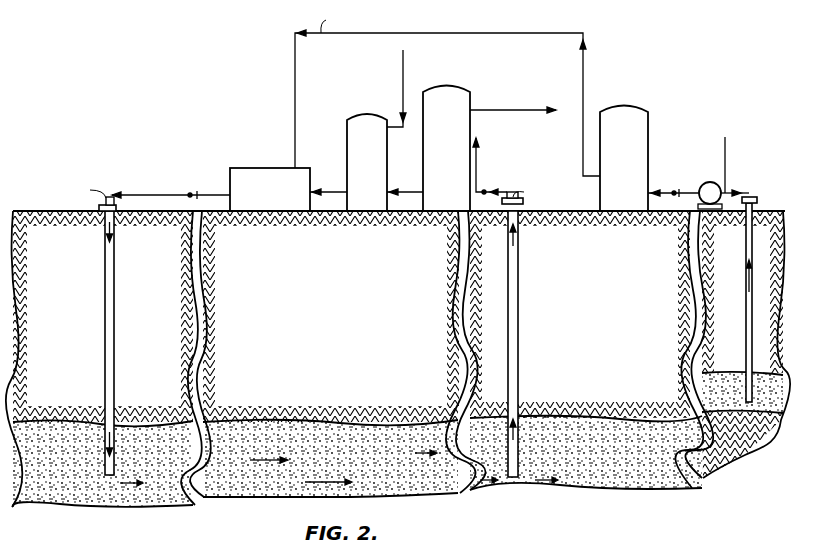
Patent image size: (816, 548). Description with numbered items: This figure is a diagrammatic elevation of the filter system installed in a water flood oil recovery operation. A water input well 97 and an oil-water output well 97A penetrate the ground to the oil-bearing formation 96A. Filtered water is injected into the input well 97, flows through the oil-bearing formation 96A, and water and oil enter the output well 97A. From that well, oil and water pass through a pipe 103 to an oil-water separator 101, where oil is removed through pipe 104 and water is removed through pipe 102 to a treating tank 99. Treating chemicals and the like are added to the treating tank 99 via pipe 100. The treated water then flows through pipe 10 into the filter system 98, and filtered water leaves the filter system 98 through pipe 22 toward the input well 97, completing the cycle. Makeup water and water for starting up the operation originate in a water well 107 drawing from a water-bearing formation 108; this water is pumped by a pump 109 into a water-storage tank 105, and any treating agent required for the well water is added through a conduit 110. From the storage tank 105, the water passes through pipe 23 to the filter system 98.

The pipe 10 is at (336, 184).
The pipe 22 is at (131, 195).
The pipe 23 is at (295, 63).
The oil-bearing formation 96A is at (352, 492).
The water input well 97 is at (115, 363).
The oil-water output well 97A is at (519, 362).
The filter system 98 is at (232, 169).
The treating tank 99 is at (347, 137).
The pipe 100 is at (404, 68).
The oil-water separator 101 is at (453, 88).
The pipe 102 is at (400, 192).
The pipe 103 is at (477, 165).
The pipe 104 is at (504, 111).
The water-storage tank 105 is at (648, 137).
The water well 107 is at (757, 198).
The water-bearing formation 108 is at (710, 392).
The pump 109 is at (704, 183).
The conduit 110 is at (730, 140).